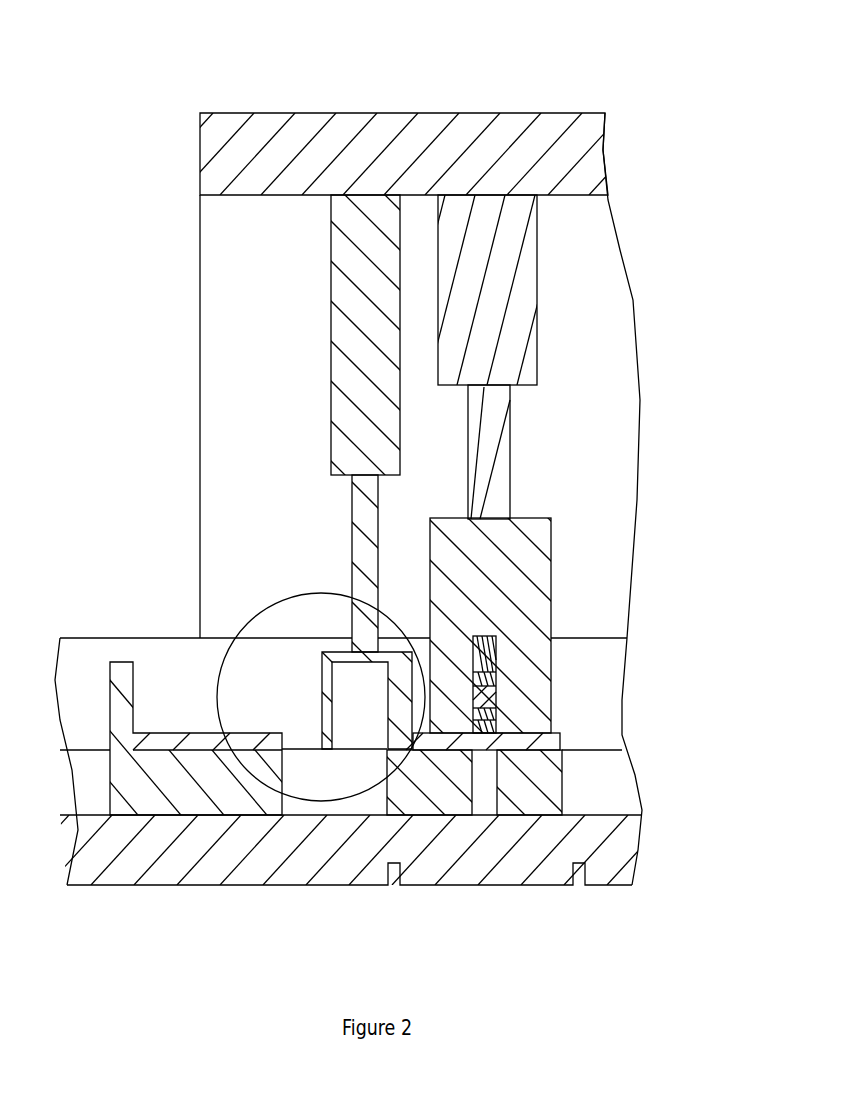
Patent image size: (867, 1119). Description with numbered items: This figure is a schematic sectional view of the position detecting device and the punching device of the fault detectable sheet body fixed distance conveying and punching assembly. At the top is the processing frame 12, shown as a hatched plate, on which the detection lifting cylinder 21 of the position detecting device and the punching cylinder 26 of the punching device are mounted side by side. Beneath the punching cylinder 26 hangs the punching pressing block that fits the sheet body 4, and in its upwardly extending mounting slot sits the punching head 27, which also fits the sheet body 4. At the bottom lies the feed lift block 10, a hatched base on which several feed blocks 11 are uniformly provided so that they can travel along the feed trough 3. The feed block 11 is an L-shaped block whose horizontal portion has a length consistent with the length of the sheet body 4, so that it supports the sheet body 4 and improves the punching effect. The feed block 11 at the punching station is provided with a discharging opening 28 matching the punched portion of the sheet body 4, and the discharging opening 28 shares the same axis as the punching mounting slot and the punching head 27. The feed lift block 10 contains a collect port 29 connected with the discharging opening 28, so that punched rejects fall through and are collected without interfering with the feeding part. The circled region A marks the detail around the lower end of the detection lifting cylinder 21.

The feed trough 3 is at (597, 782).
The processing frame 12 is at (403, 152).
The detection lifting cylinder 21 is at (350, 427).
The punching cylinder 26 is at (510, 323).
The punching head 27 is at (497, 672).
The discharging opening 28 is at (485, 770).
The collect port 29 is at (495, 850).
The sheet body 4 is at (170, 738).
The feed block 11 is at (155, 783).
The feed lift block 10 is at (283, 833).
The detail region A is at (247, 624).